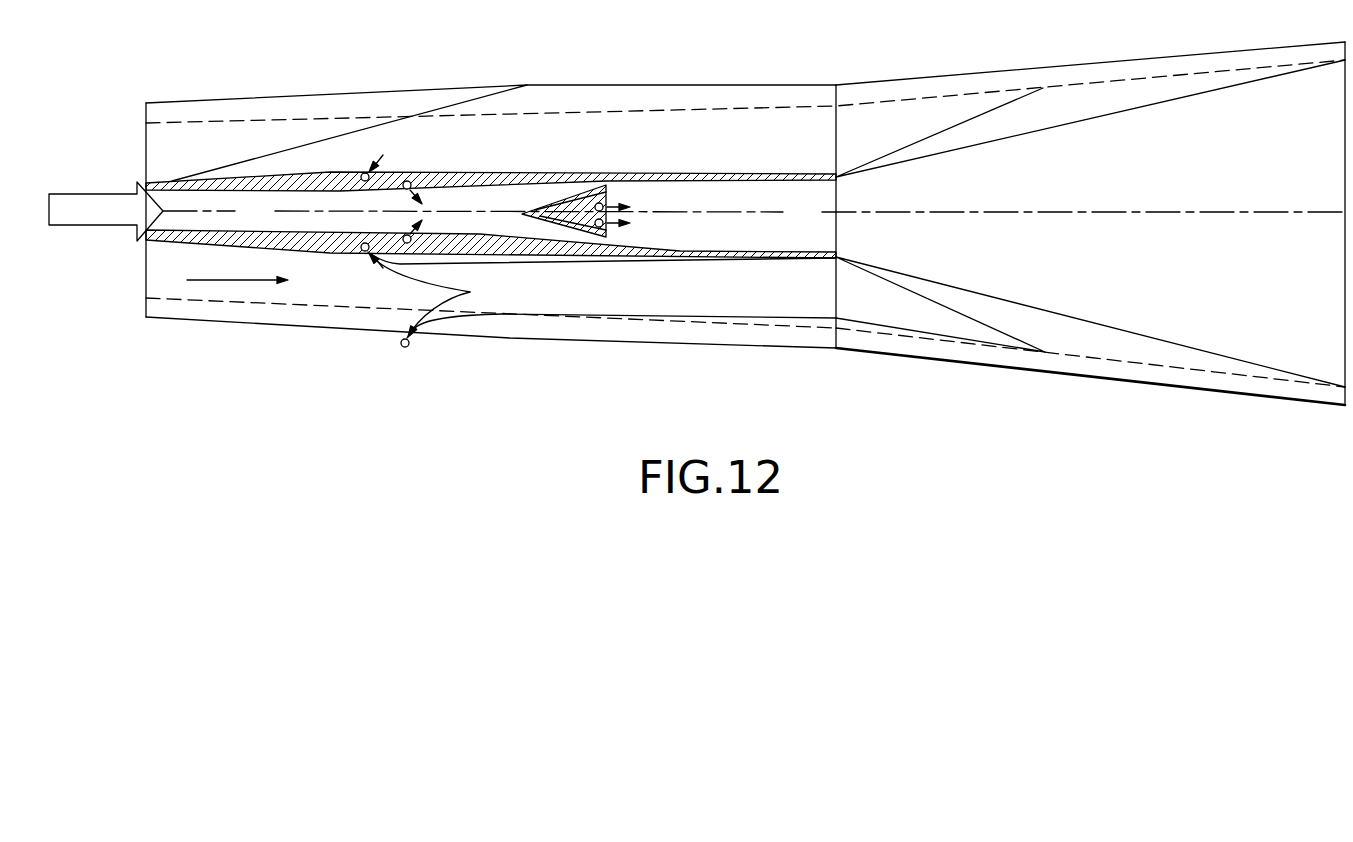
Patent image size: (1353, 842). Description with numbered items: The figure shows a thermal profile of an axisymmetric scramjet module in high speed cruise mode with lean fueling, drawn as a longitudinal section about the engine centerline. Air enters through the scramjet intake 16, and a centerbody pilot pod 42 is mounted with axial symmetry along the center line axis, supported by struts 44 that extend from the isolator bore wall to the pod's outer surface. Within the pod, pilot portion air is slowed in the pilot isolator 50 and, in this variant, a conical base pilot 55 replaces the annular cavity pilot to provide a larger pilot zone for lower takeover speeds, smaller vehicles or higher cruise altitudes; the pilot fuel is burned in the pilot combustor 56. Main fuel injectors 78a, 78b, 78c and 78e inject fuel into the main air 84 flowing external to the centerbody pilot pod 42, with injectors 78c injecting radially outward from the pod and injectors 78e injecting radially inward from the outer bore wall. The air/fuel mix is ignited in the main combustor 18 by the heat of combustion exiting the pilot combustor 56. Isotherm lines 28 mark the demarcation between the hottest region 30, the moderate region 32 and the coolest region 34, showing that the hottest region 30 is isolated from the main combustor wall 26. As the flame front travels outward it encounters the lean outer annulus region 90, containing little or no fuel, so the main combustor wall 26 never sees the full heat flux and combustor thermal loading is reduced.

The scramjet intake 16 is at (93, 194).
The main combustor 18 is at (1293, 335).
The main combustor wall 26 is at (1123, 380).
The isotherm lines 28 is at (1128, 101).
The hottest region 30 is at (1170, 203).
The moderate region 32 is at (1068, 118).
The coolest region 34 is at (745, 337).
The centerbody pilot pod 42 is at (280, 174).
The struts 44 is at (458, 120).
The pilot isolator 50 is at (267, 227).
The conical base pilot 55 is at (618, 197).
The pilot combustor 56 is at (815, 232).
The main fuel injector 78a is at (437, 202).
The main fuel injector 78b is at (675, 211).
The main fuel injectors 78c is at (360, 258).
The main fuel injectors 78e is at (618, 343).
The main air 84 is at (221, 280).
The lean outer annulus region 90 is at (918, 356).